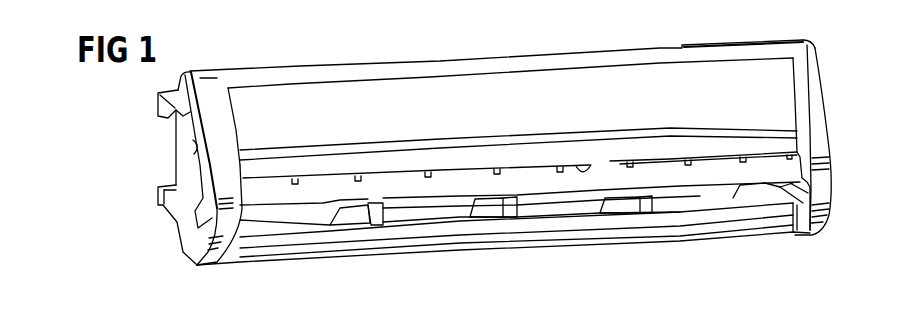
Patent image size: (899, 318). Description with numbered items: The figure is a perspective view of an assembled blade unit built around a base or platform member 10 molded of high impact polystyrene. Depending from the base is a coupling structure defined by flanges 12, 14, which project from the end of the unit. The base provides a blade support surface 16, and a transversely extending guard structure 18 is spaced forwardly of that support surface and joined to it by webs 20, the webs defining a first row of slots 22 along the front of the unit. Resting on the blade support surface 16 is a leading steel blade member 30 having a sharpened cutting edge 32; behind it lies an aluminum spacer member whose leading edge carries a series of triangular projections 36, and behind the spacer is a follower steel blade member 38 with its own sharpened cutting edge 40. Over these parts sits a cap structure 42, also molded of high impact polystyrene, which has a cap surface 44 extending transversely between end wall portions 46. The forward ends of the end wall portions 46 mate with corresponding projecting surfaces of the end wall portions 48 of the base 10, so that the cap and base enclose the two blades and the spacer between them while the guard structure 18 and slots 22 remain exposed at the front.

The base or platform member 10 is at (180, 257).
The flange 12 is at (158, 198).
The flange 14 is at (158, 110).
The blade support surface 16 is at (192, 143).
The guard structure 18 is at (593, 245).
The web 20 is at (377, 222).
The first row of slots 22 is at (298, 223).
The leading steel blade member 30 is at (757, 168).
The sharpened cutting edge 32 is at (573, 195).
The triangular projections 36 is at (497, 173).
The follower steel blade member 38 is at (763, 143).
The sharpened cutting edge 40 is at (593, 166).
The cap structure 42 is at (820, 45).
The cap surface 44 is at (760, 95).
The end wall portions 46 is at (223, 173).
The end wall portions 48 is at (218, 247).